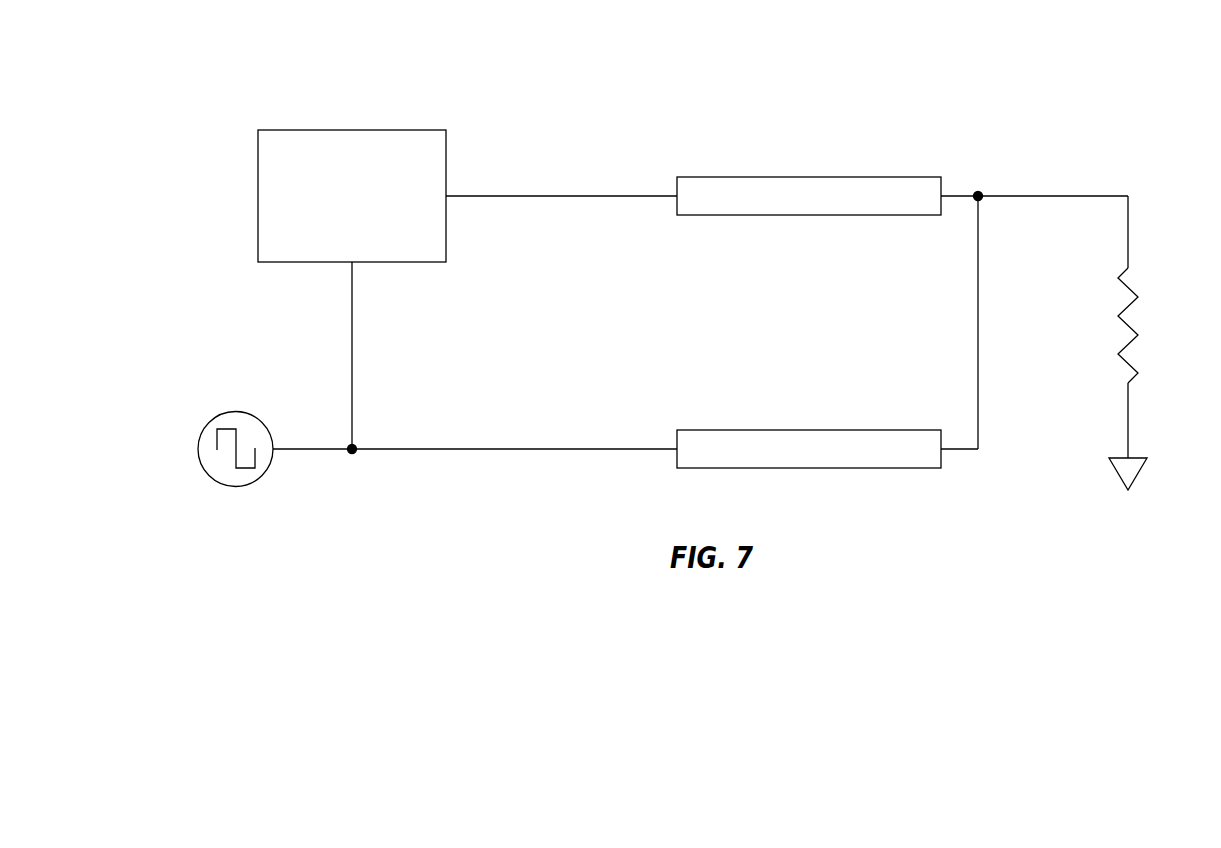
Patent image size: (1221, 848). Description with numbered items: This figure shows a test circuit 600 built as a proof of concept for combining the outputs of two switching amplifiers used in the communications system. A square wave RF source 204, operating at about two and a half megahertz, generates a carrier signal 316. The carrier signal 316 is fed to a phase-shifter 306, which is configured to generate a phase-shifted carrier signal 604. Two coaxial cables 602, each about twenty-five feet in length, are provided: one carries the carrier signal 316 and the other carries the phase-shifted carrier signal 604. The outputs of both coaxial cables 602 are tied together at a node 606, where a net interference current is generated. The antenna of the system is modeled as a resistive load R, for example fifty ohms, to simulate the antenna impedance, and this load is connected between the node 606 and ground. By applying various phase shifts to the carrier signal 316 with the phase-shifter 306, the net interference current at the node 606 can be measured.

The test circuit 600 is at (645, 66).
The phase-shifter 306 is at (427, 254).
The square wave RF source 204 is at (198, 449).
The carrier signal 316 is at (353, 440).
The phase-shifted carrier signal 604 is at (546, 196).
The coaxial cables 602 is at (752, 177).
The node 606 is at (985, 200).